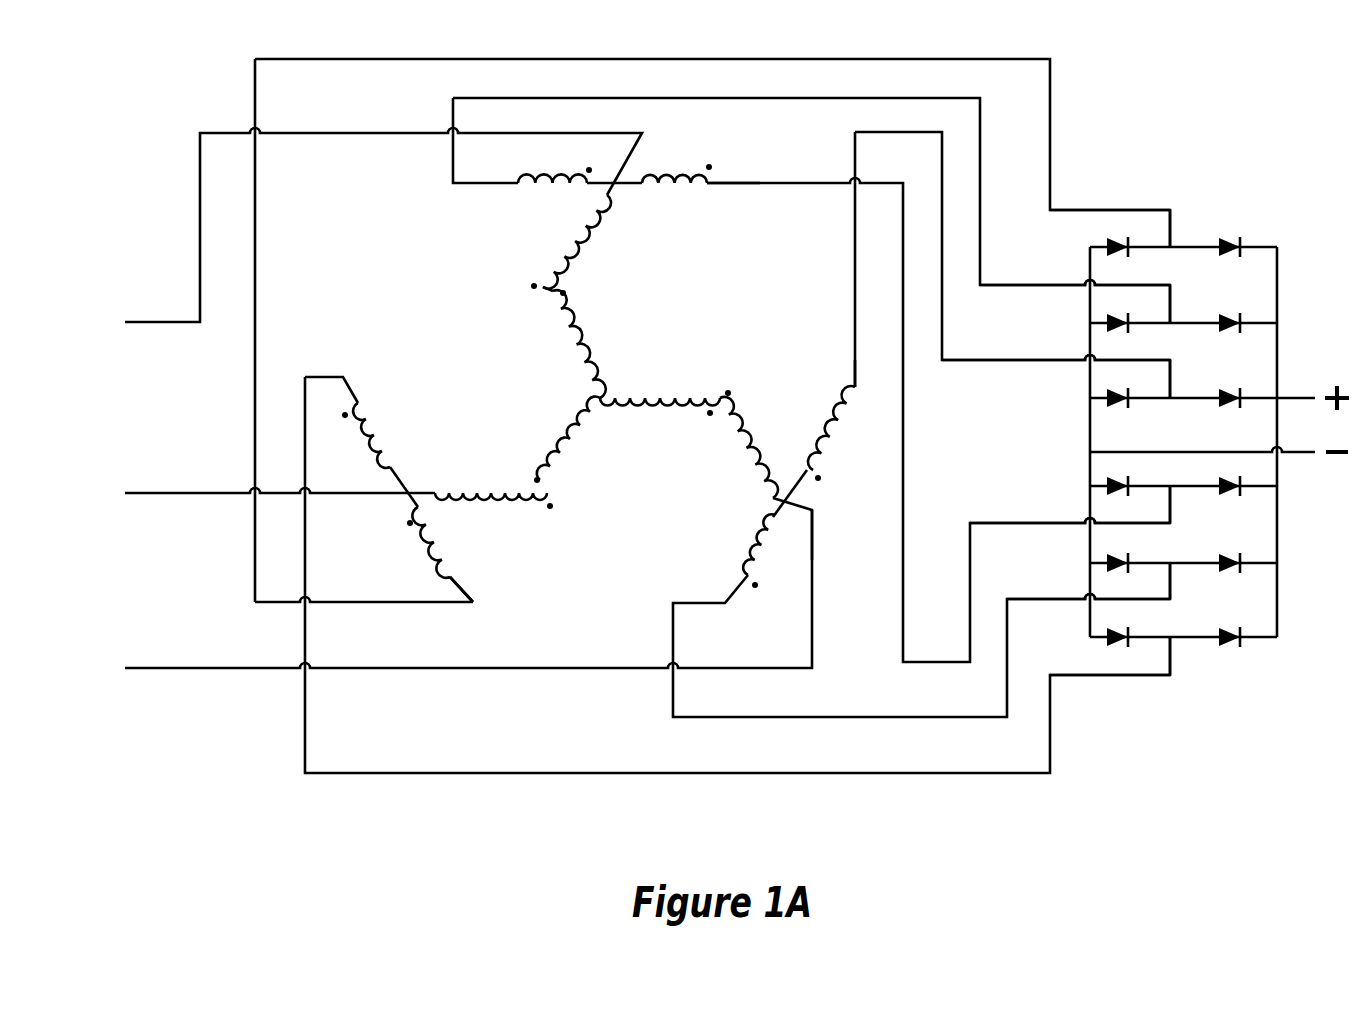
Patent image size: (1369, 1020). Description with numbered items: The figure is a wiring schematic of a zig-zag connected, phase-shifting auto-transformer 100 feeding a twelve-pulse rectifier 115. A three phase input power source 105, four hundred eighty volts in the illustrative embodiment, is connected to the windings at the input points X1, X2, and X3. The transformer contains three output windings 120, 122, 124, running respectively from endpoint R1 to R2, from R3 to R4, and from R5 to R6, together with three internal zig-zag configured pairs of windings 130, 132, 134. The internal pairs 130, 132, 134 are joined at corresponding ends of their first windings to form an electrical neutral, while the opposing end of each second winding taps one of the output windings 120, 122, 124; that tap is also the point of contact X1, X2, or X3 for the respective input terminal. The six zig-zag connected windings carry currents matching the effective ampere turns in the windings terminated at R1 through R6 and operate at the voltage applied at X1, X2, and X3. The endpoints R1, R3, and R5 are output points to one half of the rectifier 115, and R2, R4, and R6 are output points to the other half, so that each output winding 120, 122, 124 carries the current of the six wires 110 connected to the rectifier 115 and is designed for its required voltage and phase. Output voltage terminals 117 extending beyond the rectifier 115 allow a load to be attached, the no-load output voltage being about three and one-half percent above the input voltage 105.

The zig-zag connected, phase-shifting auto-transformer 100 is at (104, 138).
The three phase input power source 105 is at (145, 320).
The six wires 110 is at (1108, 207).
The twelve-pulse rectifier 115 is at (1207, 231).
The output voltage terminals 117 is at (1351, 384).
The output winding 120 is at (811, 380).
The output winding 122 is at (841, 447).
The output winding 124 is at (457, 560).
The internal zig-zag configured pair of windings 130 is at (576, 258).
The internal zig-zag configured pair of windings 132 is at (750, 435).
The internal zig-zag configured pair of windings 134 is at (507, 489).
The first endpoint of output winding R1 is at (537, 174).
The second endpoint of output winding R2 is at (700, 143).
The first endpoint of output winding R3 is at (829, 384).
The second endpoint of output winding R4 is at (921, 614).
The first endpoint of output winding R5 is at (471, 577).
The second endpoint of output winding R6 is at (348, 424).
The input point X1 is at (677, 160).
The input point X2 is at (829, 535).
The input point X3 is at (477, 482).